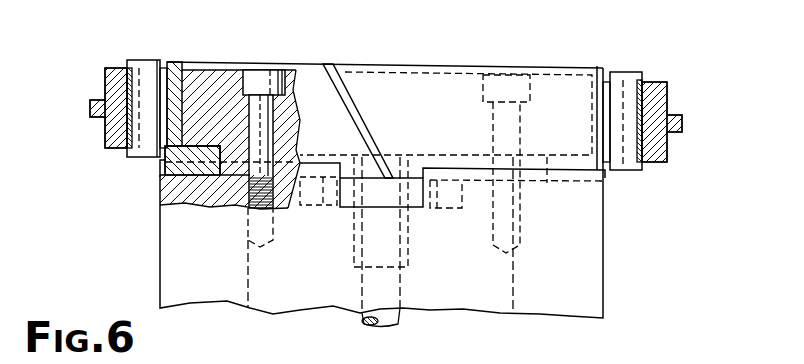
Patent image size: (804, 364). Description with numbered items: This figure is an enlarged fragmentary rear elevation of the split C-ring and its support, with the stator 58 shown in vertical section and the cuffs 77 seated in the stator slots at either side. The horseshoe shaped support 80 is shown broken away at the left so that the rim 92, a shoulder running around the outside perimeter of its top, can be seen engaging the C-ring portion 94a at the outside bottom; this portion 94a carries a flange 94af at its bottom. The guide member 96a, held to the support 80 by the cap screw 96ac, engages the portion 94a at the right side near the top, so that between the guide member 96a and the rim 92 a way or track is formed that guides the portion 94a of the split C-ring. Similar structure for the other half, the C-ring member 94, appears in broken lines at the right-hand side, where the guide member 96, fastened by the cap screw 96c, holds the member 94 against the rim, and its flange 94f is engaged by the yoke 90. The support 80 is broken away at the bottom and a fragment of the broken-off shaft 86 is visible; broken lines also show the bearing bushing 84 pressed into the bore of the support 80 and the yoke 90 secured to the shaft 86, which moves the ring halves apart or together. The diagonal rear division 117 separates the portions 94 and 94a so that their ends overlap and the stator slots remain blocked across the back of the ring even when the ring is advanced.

The stator 58 is at (106, 76).
The cuffs 77 is at (138, 62).
The C-ring portion 94a is at (373, 93).
The guide member 96a is at (190, 82).
The cap screw 96ac is at (255, 78).
The diagonal rear division 117 is at (347, 90).
The C-ring member 94 is at (456, 102).
The cap screw 96c is at (532, 88).
The guide member 96 is at (571, 80).
The rim 92 is at (160, 163).
The flange 94af is at (202, 160).
The horseshoe shaped support member 80 is at (167, 258).
The yoke 90 is at (380, 193).
The bushing 84 is at (410, 245).
The flange 94f is at (570, 183).
The shaft 86 is at (395, 322).